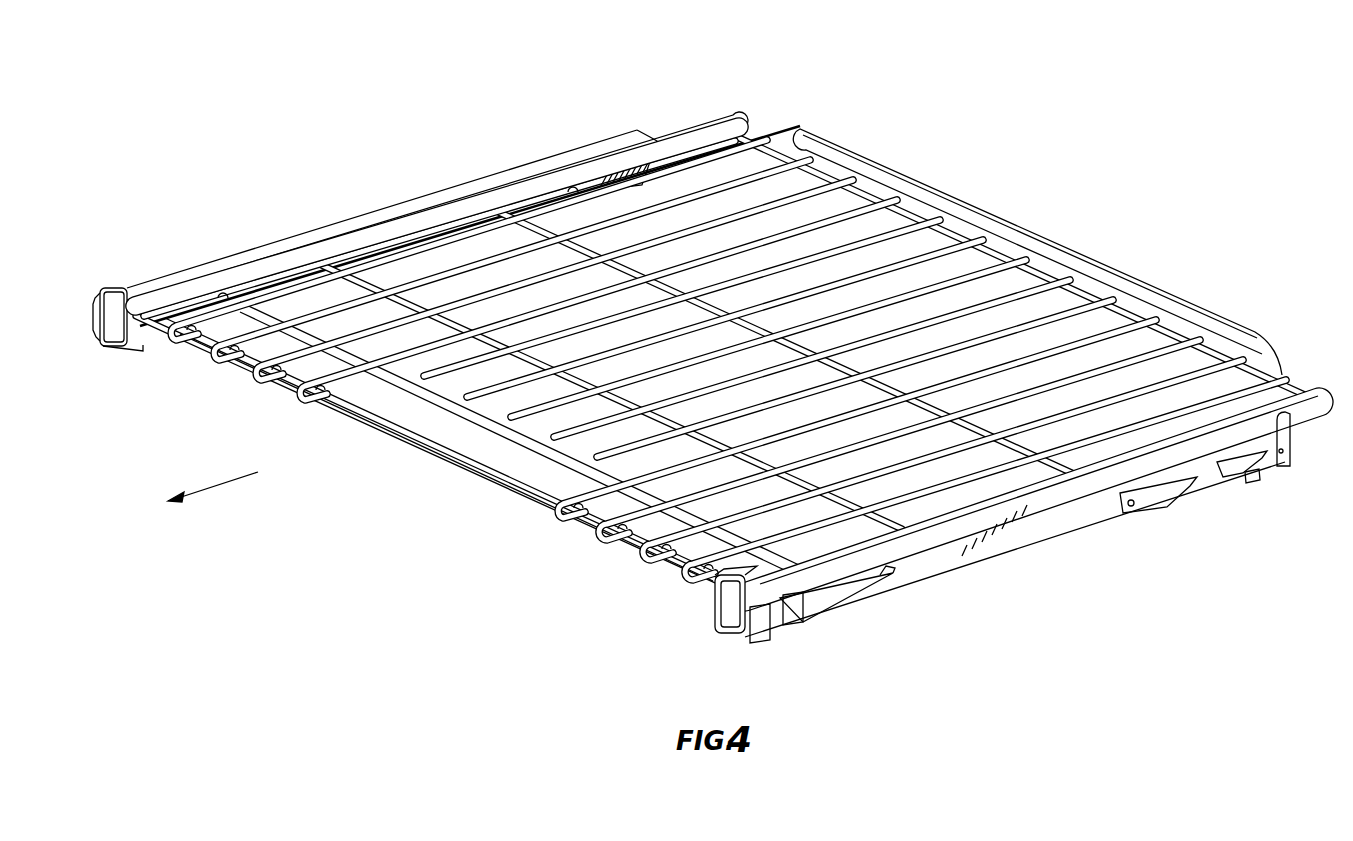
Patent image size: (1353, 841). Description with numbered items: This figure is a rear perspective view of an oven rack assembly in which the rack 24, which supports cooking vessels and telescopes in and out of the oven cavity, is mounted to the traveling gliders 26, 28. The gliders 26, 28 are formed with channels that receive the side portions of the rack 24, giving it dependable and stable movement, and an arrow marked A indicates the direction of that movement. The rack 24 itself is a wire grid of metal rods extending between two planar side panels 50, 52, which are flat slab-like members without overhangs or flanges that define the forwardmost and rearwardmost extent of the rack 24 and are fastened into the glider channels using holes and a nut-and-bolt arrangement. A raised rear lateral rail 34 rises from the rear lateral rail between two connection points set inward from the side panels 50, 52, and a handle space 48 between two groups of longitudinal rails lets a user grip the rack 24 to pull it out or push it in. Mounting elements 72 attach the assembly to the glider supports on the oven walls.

The rack 24 is at (723, 343).
The traveling glider 26 is at (723, 611).
The traveling glider 28 is at (478, 182).
The raised rear lateral rail 34 is at (945, 196).
The handle space 48 is at (440, 427).
The side panel 50 is at (1320, 405).
The side panel 52 is at (690, 136).
The mounting element 72 is at (835, 612).